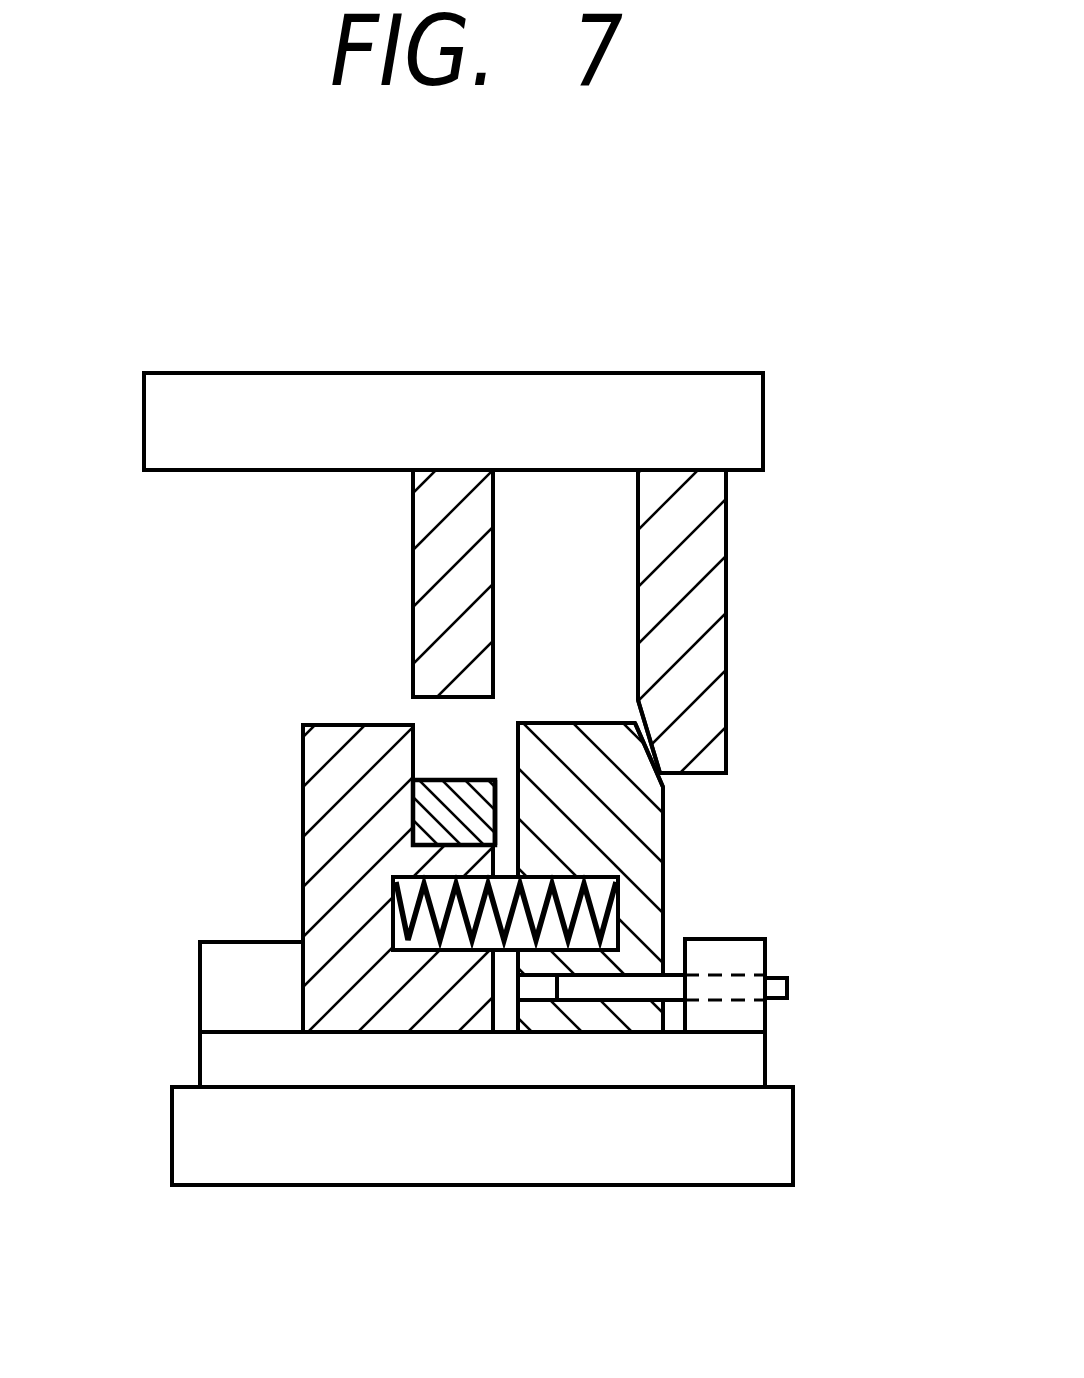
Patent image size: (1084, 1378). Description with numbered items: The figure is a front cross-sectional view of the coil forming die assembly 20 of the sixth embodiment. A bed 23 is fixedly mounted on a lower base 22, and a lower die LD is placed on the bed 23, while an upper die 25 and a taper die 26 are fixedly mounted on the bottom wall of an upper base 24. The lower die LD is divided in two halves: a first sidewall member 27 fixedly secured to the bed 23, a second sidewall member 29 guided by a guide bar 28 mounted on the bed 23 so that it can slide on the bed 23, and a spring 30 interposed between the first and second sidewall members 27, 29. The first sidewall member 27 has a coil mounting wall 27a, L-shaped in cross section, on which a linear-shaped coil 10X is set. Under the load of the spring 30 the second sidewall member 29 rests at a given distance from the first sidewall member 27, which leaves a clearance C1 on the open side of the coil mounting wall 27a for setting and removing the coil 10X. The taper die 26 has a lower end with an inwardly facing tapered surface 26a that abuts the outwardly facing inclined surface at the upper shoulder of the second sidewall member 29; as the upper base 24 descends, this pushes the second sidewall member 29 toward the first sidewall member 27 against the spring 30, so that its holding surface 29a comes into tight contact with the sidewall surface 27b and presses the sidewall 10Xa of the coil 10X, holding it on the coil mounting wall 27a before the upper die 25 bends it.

The coil forming die assembly 20 is at (702, 346).
The lower base 22 is at (333, 1160).
The bed 23 is at (737, 1060).
The upper base 24 is at (313, 395).
The upper die 25 is at (458, 503).
The taper die 26 is at (708, 551).
The tapered surface 26a is at (624, 762).
The first sidewall member 27 is at (331, 838).
The coil mounting wall 27a is at (413, 797).
The sidewall surface 27b is at (498, 865).
The guide bar 28 is at (626, 988).
The second sidewall member 29 is at (640, 864).
The holding surface 29a is at (675, 747).
The spring 30 is at (512, 867).
The linear-shaped coil 10X is at (442, 808).
The sidewall of the coil 10Xa is at (495, 808).
The clearance C1 is at (505, 913).
The lower die LD is at (528, 678).